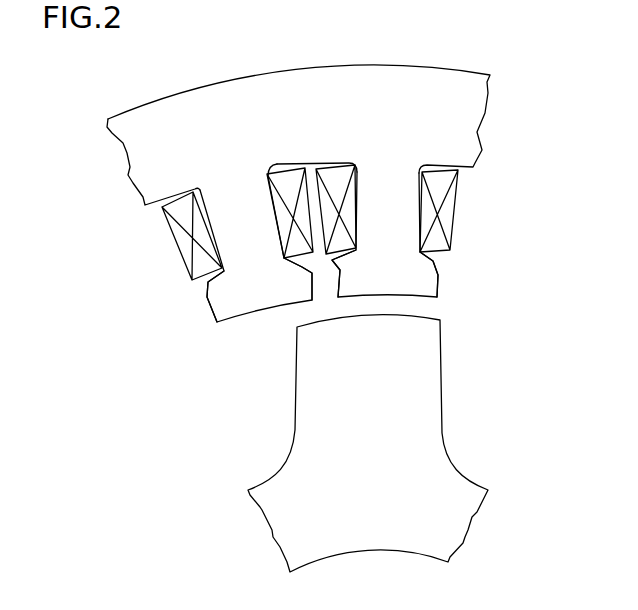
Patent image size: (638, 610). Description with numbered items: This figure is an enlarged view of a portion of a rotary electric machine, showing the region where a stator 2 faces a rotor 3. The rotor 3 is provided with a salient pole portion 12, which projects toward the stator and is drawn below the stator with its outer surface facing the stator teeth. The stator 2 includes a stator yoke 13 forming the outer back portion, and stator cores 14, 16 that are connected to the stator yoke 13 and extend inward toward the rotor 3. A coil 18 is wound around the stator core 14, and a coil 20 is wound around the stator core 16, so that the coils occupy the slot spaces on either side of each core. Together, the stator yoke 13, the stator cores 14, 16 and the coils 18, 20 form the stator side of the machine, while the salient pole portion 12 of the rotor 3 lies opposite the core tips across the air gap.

The stator 2 is at (503, 150).
The rotor 3 is at (472, 453).
The salient pole portion 12 is at (443, 387).
The stator yoke 13 is at (279, 97).
The stator core 14 is at (260, 317).
The stator core 16 is at (437, 298).
The coil 18 is at (208, 283).
The coil 20 is at (444, 256).